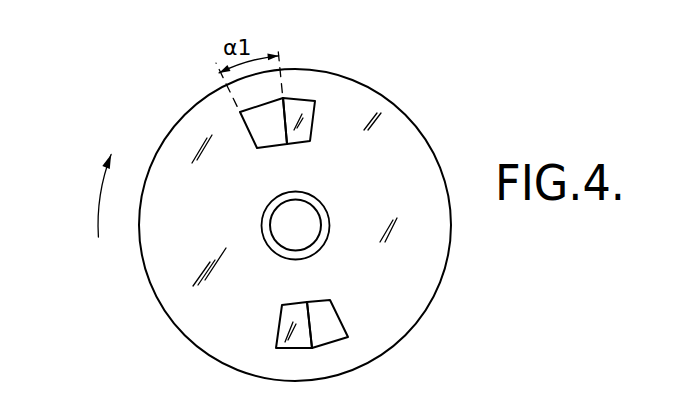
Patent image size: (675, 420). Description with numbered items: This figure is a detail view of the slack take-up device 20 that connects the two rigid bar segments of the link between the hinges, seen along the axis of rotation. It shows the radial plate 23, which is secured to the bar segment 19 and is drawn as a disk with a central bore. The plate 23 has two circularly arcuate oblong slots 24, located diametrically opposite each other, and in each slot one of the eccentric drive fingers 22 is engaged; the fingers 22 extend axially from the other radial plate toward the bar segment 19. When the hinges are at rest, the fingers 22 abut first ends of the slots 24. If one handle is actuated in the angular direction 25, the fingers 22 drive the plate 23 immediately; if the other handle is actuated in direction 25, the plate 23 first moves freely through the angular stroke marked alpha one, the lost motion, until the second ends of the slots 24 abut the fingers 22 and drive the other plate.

The rigid bar segment 19 is at (308, 247).
The slack take-up device 20 is at (415, 106).
The eccentric drive fingers 22 is at (298, 112).
The radial plate 23 is at (167, 252).
The circularly arcuate oblong slots 24 is at (240, 114).
The angular direction 25 is at (100, 190).